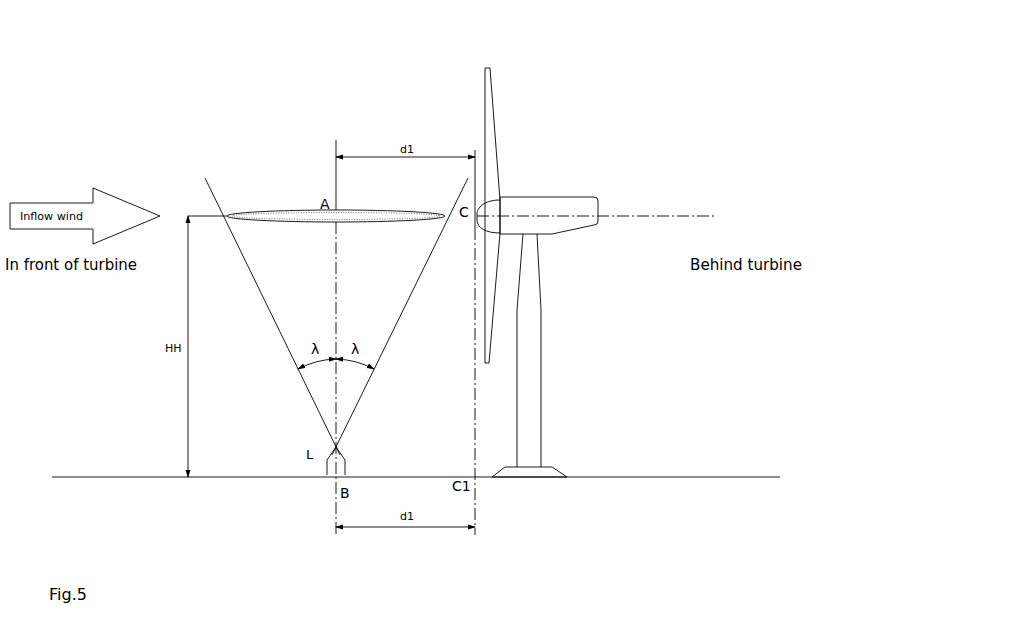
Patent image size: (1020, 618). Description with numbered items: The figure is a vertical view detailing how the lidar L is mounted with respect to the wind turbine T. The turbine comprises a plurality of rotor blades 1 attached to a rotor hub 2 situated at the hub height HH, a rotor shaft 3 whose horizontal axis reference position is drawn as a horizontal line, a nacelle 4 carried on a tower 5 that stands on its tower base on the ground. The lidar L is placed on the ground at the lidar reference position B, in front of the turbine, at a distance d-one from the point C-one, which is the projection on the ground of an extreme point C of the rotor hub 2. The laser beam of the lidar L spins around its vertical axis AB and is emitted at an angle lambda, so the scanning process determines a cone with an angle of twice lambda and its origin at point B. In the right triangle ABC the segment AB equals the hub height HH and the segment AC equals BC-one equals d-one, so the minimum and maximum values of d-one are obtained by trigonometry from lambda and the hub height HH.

The rotor blades 1 is at (491, 102).
The rotor hub 2 is at (491, 205).
The rotor shaft 3 is at (700, 206).
The nacelle 4 is at (600, 197).
The tower 5 is at (542, 407).